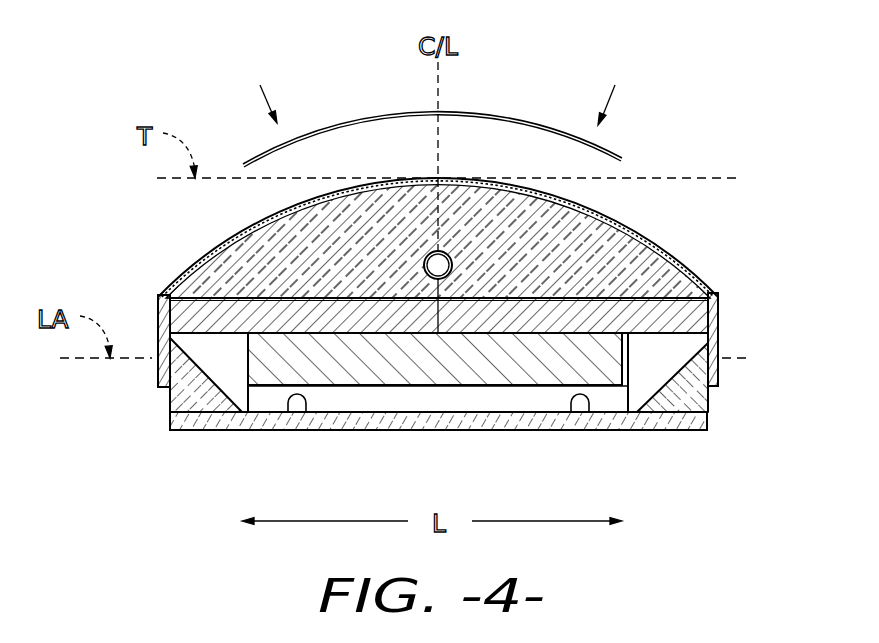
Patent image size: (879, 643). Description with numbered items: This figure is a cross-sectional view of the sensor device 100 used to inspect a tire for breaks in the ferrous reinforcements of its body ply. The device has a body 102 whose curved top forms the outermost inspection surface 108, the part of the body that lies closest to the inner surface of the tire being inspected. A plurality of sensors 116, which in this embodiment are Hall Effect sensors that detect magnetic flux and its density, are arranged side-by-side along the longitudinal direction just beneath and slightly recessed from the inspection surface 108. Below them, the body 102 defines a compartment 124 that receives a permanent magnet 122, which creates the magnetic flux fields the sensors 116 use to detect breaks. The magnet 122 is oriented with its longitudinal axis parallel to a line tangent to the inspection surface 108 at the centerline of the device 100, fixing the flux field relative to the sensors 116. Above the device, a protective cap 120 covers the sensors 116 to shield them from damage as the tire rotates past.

The sensor device 100 is at (475, 195).
The body 102 is at (688, 395).
The outermost inspection surface 108 is at (209, 243).
The sensors 116 is at (595, 212).
The protective cap 120 is at (470, 112).
The permanent magnet 122 is at (385, 360).
The compartment 124 is at (606, 405).